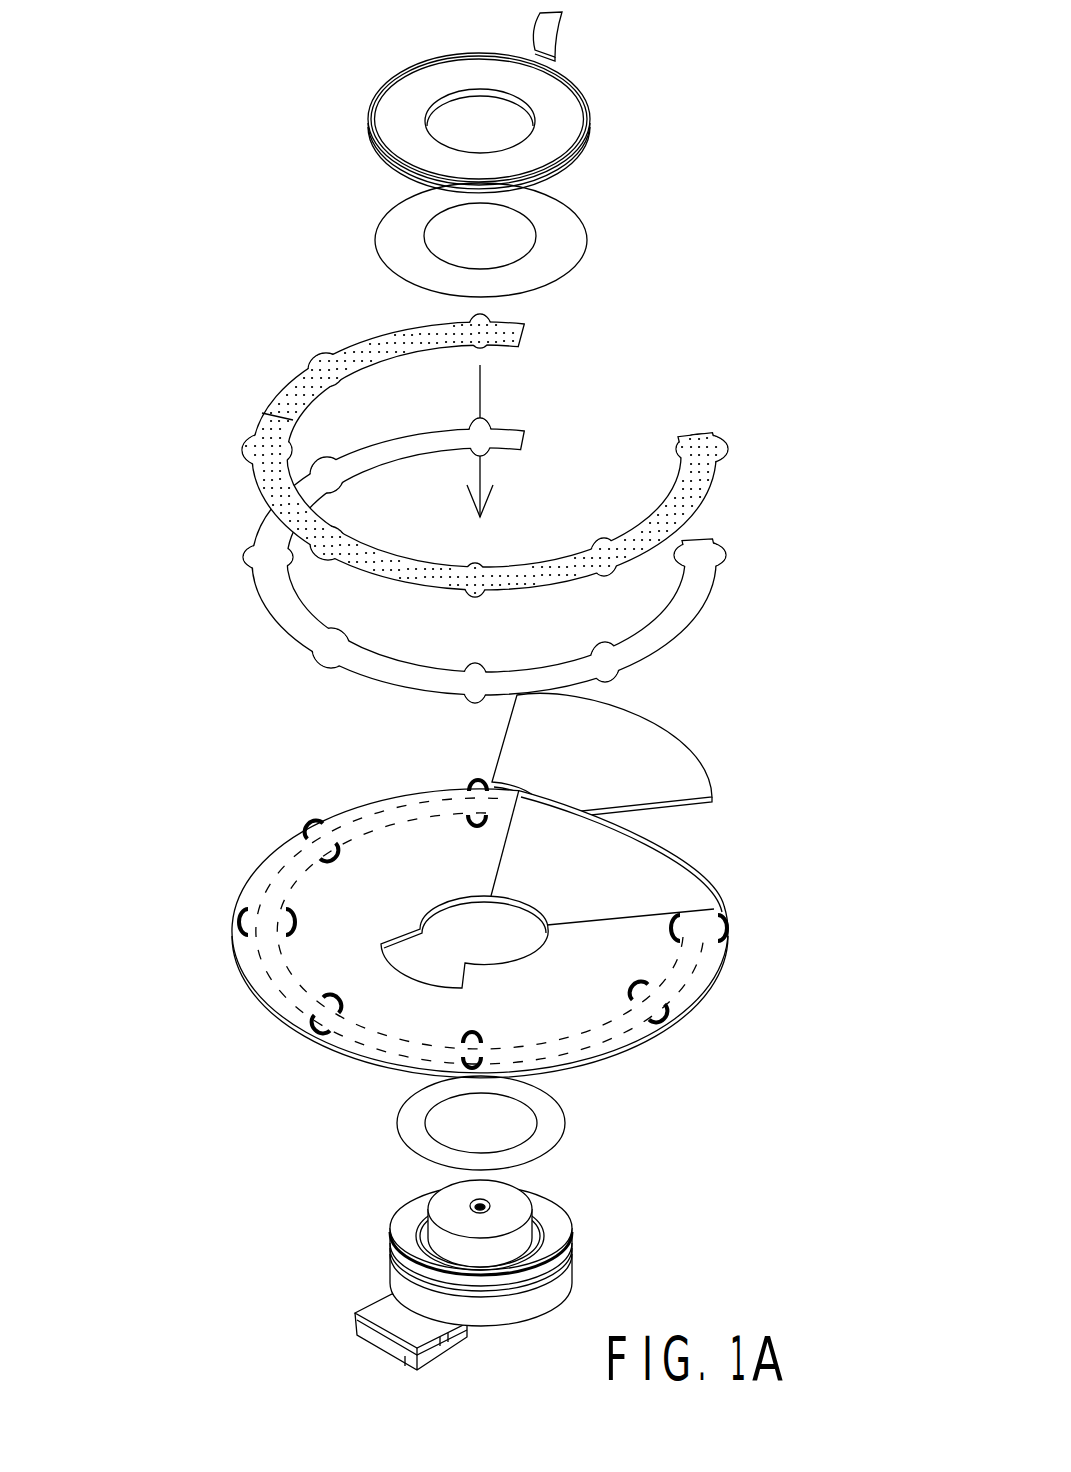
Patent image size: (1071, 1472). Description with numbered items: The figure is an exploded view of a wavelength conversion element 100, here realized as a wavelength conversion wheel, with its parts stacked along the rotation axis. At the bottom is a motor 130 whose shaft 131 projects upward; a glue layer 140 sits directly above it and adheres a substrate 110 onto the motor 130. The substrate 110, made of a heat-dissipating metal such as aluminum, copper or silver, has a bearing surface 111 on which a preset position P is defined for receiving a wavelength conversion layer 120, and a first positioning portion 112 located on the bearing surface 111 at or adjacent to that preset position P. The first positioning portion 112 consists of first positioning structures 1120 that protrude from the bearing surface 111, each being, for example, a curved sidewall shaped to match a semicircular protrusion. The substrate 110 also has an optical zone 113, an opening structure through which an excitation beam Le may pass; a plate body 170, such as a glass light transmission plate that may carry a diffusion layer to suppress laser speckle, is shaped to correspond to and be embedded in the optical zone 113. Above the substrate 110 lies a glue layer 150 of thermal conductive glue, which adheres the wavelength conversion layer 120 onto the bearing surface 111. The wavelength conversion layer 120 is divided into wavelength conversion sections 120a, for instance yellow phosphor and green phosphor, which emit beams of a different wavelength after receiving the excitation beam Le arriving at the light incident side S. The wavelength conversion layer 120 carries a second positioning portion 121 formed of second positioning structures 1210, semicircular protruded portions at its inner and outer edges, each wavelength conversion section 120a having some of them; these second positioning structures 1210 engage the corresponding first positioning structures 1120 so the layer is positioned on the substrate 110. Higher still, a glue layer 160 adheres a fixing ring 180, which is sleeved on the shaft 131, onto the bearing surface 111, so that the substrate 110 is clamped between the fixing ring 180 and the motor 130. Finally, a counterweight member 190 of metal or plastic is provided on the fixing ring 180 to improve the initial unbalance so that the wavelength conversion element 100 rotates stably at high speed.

The wavelength conversion element 100 is at (208, 42).
The substrate 110 is at (442, 925).
The bearing surface 111 is at (330, 903).
The first positioning portion 112 is at (393, 924).
The first positioning structure 1120 is at (243, 916).
The optical zone 113 is at (643, 862).
The wavelength conversion layer 120 is at (390, 439).
The wavelength conversion section 120a is at (365, 352).
The second positioning portion 121 is at (172, 424).
The second positioning structure 1210 is at (248, 450).
The motor 130 is at (520, 1275).
The shaft 131 is at (520, 1240).
The glue layer 140 is at (553, 1122).
The glue layer 150 is at (683, 600).
The glue layer 160 is at (567, 228).
The plate body 170 is at (618, 731).
The fixing ring 180 is at (560, 107).
The counterweight member 190 is at (552, 30).
The light incident side S is at (360, 288).
The excitation beam Le is at (483, 393).
The preset position P is at (690, 948).